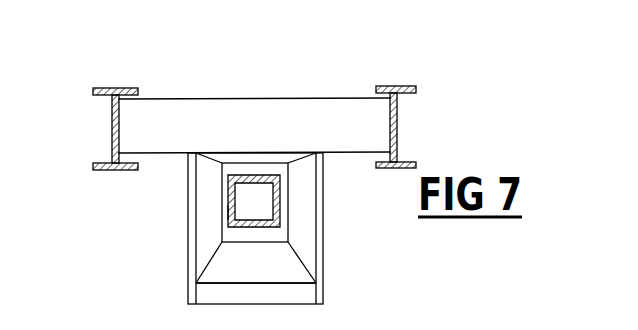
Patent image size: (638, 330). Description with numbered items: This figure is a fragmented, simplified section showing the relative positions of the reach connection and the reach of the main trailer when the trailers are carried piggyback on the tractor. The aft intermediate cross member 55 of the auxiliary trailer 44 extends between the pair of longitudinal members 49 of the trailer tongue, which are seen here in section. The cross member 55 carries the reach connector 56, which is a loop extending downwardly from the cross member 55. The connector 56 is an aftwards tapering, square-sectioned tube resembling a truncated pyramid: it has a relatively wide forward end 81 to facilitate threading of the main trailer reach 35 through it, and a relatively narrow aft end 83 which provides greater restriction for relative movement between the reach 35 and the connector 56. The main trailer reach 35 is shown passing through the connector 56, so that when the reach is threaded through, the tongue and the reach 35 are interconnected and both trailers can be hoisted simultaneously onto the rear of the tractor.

The auxiliary trailer 44 is at (392, 78).
The aft intermediate cross member 55 is at (298, 107).
The longitudinal members 49 is at (112, 122).
The main trailer reach 35 is at (280, 198).
The aft end 83 is at (228, 212).
The forward end 81 is at (322, 267).
The reach connector 56 is at (352, 253).